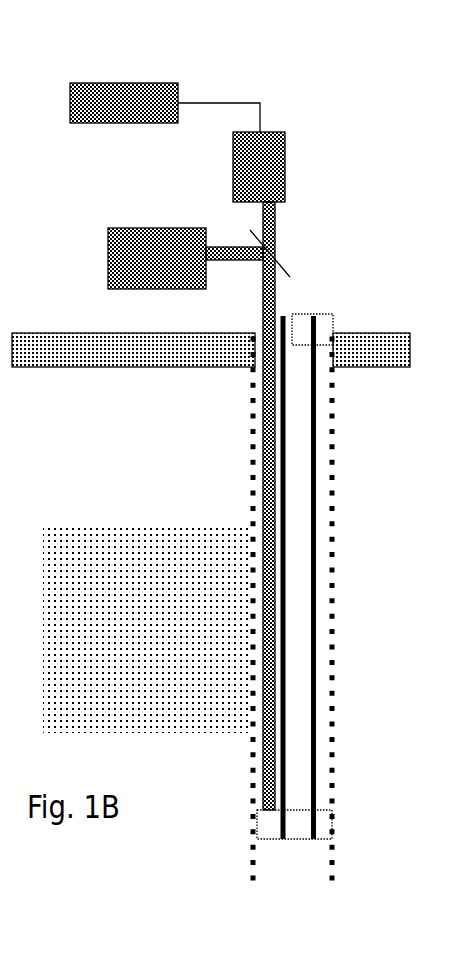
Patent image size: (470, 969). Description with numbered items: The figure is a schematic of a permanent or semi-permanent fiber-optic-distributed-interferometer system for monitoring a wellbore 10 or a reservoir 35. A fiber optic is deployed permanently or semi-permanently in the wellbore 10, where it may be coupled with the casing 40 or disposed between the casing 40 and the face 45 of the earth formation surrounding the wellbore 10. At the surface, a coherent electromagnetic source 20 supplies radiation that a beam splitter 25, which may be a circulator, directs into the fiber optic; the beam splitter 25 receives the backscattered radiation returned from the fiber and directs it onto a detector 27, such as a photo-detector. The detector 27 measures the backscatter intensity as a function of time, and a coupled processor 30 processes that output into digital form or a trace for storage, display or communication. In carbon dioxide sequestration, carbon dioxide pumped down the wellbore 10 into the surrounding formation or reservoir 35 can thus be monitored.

The wellbore 10 is at (314, 869).
The coherent electromagnetic source 20 is at (153, 228).
The beam splitter 25 is at (277, 263).
The detector 27 is at (285, 160).
The processor 30 is at (70, 103).
The reservoir 35 is at (155, 647).
The casing 40 is at (316, 585).
The face of the earth formation 45 is at (263, 405).